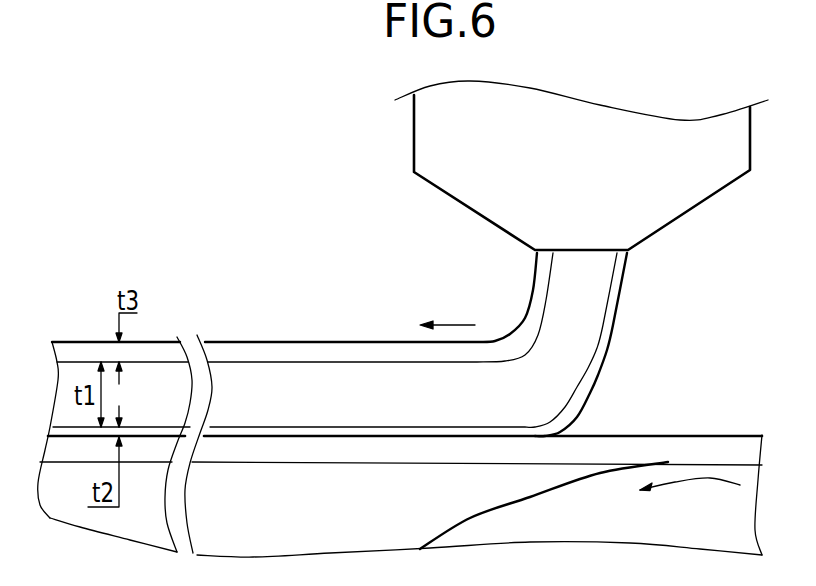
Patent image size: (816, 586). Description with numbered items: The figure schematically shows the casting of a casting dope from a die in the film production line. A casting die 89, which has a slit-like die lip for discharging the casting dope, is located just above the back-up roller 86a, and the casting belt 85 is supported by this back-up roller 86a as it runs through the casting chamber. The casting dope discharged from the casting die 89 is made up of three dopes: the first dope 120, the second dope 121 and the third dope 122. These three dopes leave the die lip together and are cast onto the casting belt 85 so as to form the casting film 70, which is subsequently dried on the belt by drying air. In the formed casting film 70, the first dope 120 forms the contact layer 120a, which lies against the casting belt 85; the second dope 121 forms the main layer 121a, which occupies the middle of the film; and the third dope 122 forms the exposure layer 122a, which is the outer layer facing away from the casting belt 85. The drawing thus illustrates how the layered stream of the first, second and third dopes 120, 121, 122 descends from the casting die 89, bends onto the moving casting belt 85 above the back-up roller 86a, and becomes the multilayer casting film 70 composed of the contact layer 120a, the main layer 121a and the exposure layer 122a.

The casting die 89 is at (430, 135).
The first dope 120 is at (394, 361).
The contact layer 120a is at (263, 432).
The second dope 121 is at (364, 382).
The main layer 121a is at (250, 380).
The third dope 122 is at (363, 309).
The exposure layer 122a is at (222, 347).
The casting film 70 is at (372, 342).
The casting belt 85 is at (403, 446).
The back-up roller 86a is at (622, 485).